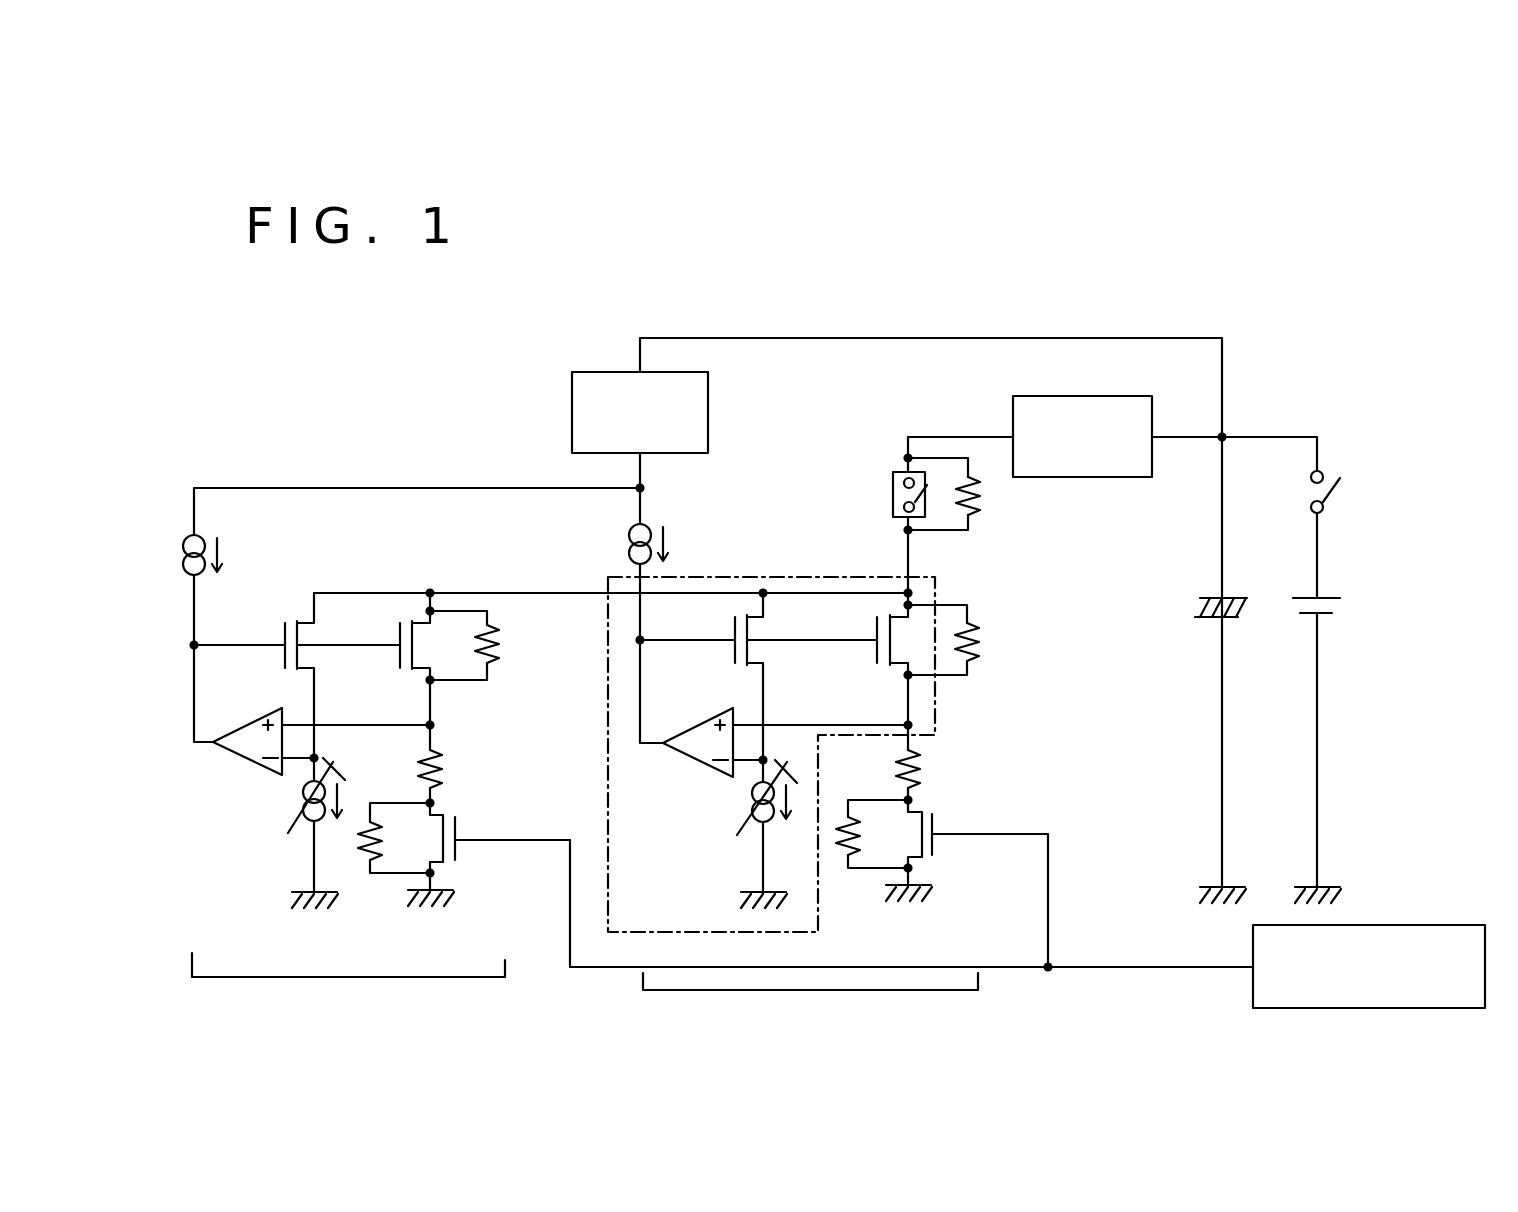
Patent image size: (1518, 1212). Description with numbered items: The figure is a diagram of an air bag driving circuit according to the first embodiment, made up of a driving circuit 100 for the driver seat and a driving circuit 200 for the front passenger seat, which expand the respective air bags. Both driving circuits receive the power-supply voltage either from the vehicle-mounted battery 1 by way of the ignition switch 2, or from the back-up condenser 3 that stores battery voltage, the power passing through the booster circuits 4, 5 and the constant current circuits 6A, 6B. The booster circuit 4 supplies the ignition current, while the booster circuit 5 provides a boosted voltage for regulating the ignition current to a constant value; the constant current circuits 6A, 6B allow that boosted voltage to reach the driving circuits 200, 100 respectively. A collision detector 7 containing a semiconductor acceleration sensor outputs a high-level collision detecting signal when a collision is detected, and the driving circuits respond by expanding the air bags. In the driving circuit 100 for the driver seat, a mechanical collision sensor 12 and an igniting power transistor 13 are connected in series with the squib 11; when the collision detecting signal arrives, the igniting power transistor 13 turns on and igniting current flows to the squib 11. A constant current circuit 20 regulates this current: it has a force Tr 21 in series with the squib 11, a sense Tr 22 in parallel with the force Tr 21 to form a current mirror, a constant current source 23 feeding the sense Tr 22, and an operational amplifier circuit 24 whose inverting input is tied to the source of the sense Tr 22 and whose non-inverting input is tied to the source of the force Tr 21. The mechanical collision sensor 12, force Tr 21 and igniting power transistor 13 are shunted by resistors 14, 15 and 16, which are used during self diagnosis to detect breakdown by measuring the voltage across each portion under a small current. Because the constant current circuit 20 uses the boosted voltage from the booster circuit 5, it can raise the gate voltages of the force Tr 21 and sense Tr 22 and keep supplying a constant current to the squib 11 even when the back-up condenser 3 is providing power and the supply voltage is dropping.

The vehicle-mounted battery 1 is at (1327, 597).
The ignition switch 2 is at (1333, 497).
The back-up condenser 3 is at (1228, 595).
The booster circuit 4 is at (1088, 477).
The booster circuit 5 is at (570, 415).
The constant current circuit 6A is at (203, 532).
The constant current circuit 6B is at (625, 537).
The collision detector 7 is at (1380, 925).
The squib 11 is at (913, 753).
The mechanical collision sensor 12 is at (890, 493).
The igniting power transistor 13 is at (928, 810).
The resistor 14 is at (980, 503).
The resistor 15 is at (977, 648).
The resistor 16 is at (838, 842).
The constant current circuit 20 is at (748, 570).
The force Tr 21 is at (887, 617).
The sense Tr 22 is at (743, 615).
The constant current source 23 is at (752, 808).
The operational amplifier circuit 24 is at (692, 760).
The driving circuit for driver seat 100 is at (921, 1002).
The driving circuit for front passenger seat 200 is at (375, 991).